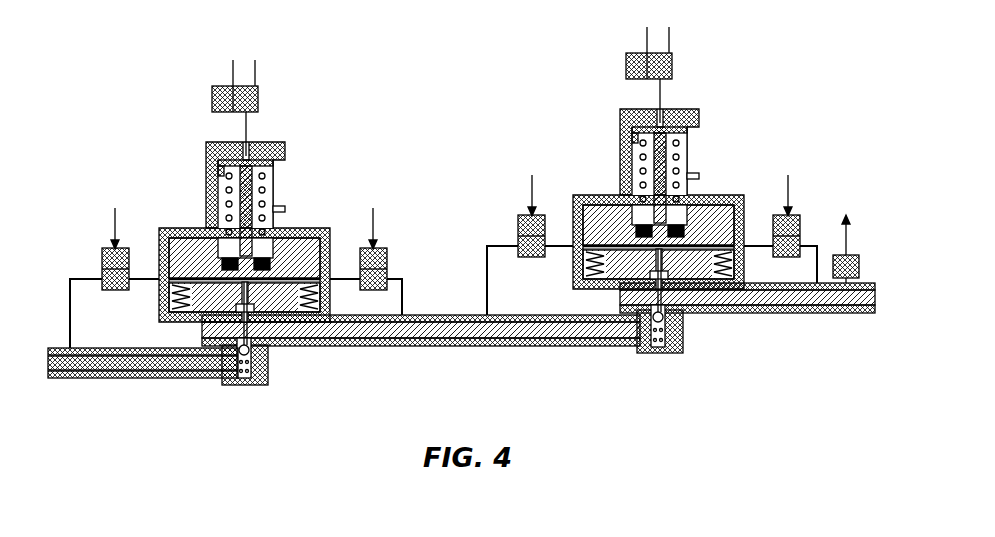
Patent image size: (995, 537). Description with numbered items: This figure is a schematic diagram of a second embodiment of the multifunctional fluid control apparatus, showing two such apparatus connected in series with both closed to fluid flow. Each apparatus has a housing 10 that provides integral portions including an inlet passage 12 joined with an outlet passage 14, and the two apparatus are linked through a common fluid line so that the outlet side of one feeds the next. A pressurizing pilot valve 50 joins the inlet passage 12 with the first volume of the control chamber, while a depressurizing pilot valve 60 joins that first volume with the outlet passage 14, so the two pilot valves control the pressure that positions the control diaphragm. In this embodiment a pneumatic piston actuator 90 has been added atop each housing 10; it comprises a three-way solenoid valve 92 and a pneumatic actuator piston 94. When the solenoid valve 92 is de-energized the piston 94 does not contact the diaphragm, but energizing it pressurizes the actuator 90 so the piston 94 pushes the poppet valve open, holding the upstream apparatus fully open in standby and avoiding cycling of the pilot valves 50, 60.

The housing 10 is at (318, 229).
The inlet passage 12 is at (108, 380).
The outlet passage 14 is at (366, 348).
The pressurizing pilot valve 50 is at (102, 272).
The depressurizing pilot valve 60 is at (388, 260).
The pneumatic piston actuator 90 is at (470, 141).
The three-way solenoid valve 92 is at (212, 100).
The pneumatic actuator piston 94 is at (276, 180).